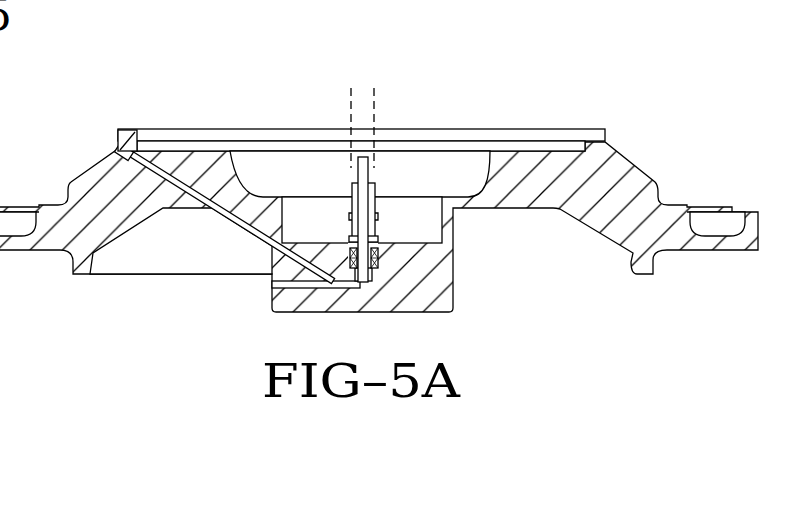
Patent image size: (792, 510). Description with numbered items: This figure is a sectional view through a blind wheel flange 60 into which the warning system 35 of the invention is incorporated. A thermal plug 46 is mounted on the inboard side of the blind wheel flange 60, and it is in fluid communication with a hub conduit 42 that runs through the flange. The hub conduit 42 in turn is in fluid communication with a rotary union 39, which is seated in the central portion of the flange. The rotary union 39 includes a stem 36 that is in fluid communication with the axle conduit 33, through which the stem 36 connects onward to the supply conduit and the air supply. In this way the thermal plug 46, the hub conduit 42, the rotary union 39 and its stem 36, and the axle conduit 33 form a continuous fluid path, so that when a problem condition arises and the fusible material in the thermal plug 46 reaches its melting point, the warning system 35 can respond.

The blind wheel flange 60 is at (686, 114).
The hub conduit 42 is at (215, 217).
The warning system 35 is at (110, 150).
The thermal plug 46 is at (122, 138).
The stem 36 is at (350, 232).
The rotary union 39 is at (384, 266).
The axle conduit 33 is at (375, 110).